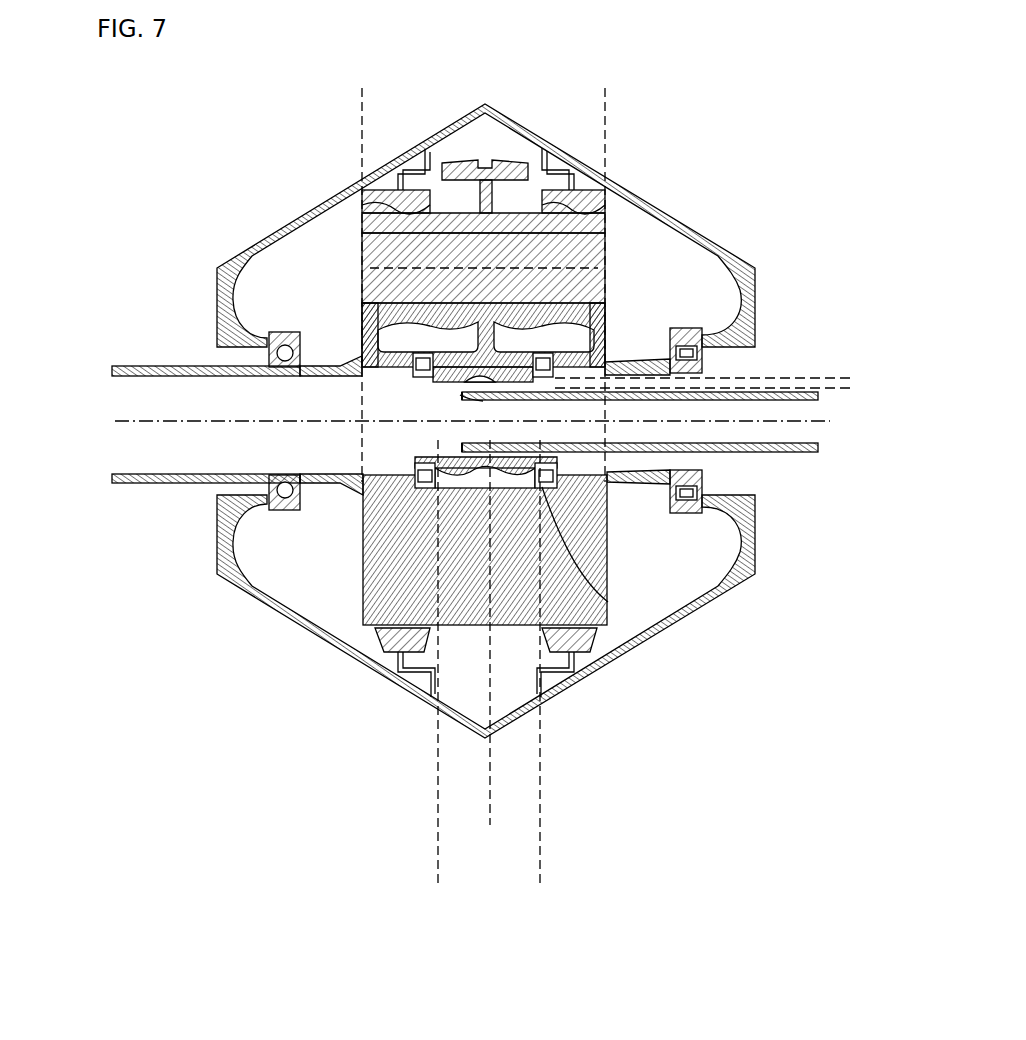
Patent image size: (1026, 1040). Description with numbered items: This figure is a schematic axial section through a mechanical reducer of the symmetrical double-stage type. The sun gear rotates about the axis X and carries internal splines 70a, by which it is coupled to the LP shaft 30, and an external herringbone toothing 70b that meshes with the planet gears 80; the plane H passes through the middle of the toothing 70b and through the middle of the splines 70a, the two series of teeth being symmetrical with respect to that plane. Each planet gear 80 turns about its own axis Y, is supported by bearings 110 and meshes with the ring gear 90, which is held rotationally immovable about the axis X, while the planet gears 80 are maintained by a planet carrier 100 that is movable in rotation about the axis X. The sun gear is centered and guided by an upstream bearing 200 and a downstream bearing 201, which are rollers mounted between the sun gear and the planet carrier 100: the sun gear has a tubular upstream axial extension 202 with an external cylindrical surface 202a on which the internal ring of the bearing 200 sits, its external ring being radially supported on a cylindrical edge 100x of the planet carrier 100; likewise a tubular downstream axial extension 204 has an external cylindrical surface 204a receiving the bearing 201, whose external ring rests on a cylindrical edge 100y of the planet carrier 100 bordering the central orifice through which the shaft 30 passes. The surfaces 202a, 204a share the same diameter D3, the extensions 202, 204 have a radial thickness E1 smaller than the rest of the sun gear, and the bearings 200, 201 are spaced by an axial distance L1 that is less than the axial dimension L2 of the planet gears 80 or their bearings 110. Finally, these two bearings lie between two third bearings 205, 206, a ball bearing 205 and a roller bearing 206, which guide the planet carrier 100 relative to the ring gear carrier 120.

The ring gear carrier 120 is at (628, 193).
The ring gear 90 is at (385, 198).
The planet gears 80 is at (583, 225).
The bearings of the planet gears 110 is at (382, 270).
The planet carrier 100 is at (365, 362).
The cylindrical edge 100x is at (390, 350).
The cylindrical edge 100y is at (578, 354).
The axis of the planet gear Y is at (592, 316).
The axis of rotation X is at (163, 421).
The upstream bearing 200 is at (432, 490).
The third bearing 205 is at (265, 366).
The third bearing 206 is at (707, 358).
The upstream axial extension 202 is at (425, 462).
The external cylindrical surface 202a is at (397, 505).
The downstream axial extension 204 is at (672, 478).
The external cylindrical surface 204a is at (662, 474).
The downstream bearing 201 is at (606, 370).
The LP shaft 30 is at (735, 452).
The internal splines 70a is at (553, 452).
The external herringbone toothing 70b is at (545, 422).
The plane H is at (490, 780).
The axial distance L1 is at (540, 858).
The axial dimension L2 is at (362, 92).
The radial thickness E1 is at (857, 414).
The diameter D3 is at (882, 378).